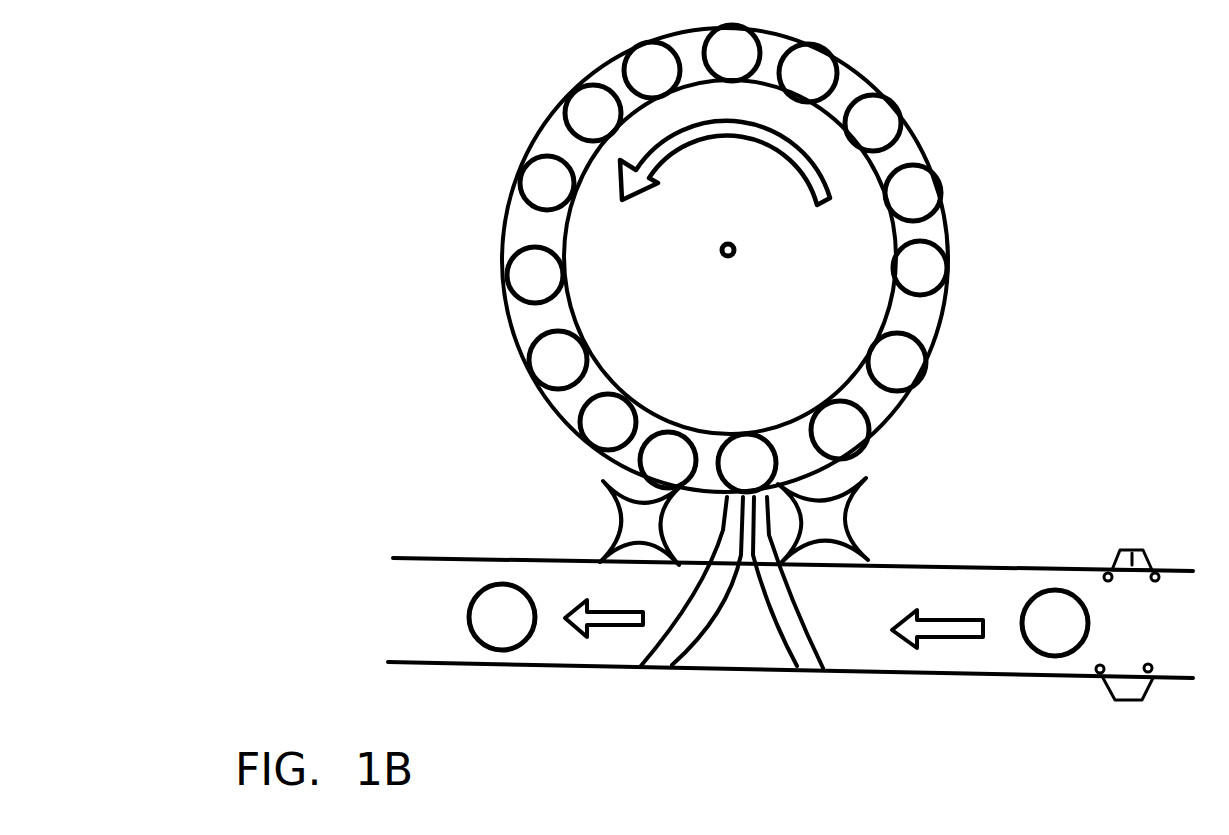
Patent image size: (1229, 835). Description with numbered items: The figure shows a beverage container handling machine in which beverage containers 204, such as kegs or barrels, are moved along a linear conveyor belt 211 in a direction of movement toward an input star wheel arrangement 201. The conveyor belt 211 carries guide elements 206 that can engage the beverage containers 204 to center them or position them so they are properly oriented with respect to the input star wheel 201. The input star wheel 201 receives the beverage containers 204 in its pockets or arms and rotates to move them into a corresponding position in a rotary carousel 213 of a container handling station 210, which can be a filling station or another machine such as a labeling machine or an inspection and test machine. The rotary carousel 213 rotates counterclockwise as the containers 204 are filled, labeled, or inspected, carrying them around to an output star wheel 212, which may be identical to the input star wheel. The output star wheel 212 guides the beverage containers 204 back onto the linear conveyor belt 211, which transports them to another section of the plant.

The input star wheel arrangement 201 is at (850, 513).
The beverage containers 204 is at (933, 284).
The guide elements 206 is at (1127, 546).
The container handling station 210 is at (457, 267).
The linear conveyor belt 211 is at (991, 652).
The output star wheel 212 is at (647, 523).
The rotary carousel 213 is at (555, 129).